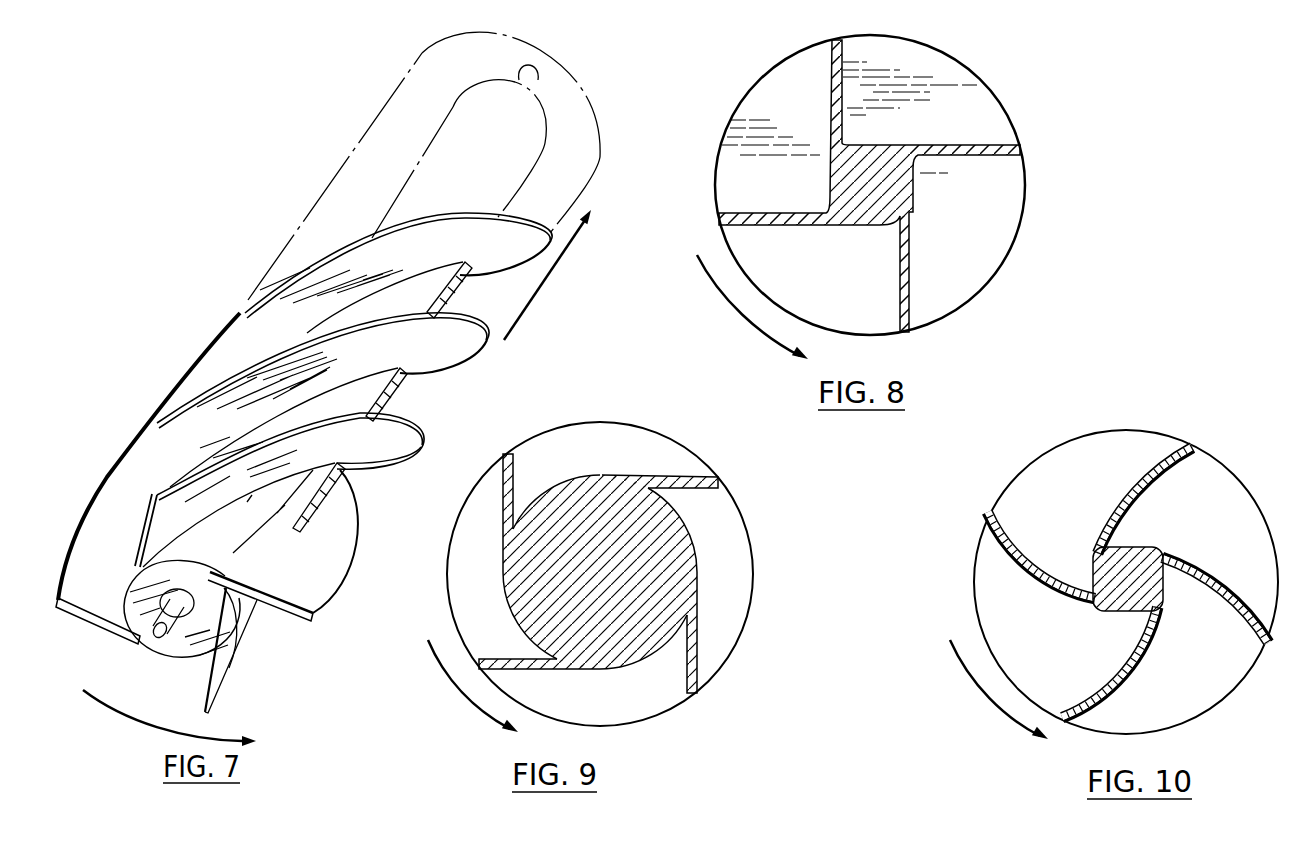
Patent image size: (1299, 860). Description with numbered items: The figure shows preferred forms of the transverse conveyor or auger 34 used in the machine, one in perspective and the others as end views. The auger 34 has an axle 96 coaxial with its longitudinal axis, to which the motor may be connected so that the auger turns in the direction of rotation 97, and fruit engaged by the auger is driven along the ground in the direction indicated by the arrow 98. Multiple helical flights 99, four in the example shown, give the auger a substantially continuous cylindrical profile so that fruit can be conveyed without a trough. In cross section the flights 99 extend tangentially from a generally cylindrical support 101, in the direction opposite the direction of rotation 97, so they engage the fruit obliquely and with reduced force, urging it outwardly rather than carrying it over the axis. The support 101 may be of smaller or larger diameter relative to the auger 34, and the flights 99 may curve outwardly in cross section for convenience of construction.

In FIG. 7, the auger 34 is at (222, 313).
In FIG. 8, the auger 34 is at (1006, 98).
In FIG. 7, the axle 96 is at (155, 632).
In FIG. 7, the direction of rotation 97 is at (212, 741).
In FIG. 8, the direction of rotation 97 is at (752, 336).
In FIG. 9, the direction of rotation 97 is at (478, 708).
In FIG. 10, the direction of rotation 97 is at (992, 711).
In FIG. 7, the direction of fruit conveyance 98 is at (533, 308).
In FIG. 7, the helical flights 99 is at (213, 488).
In FIG. 8, the helical flights 99 is at (757, 115).
In FIG. 9, the helical flights 99 is at (672, 460).
In FIG. 10, the helical flights 99 is at (1035, 487).
In FIG. 7, the cylindrical support 101 is at (372, 390).
In FIG. 8, the cylindrical support 101 is at (853, 182).
In FIG. 9, the cylindrical support 101 is at (597, 510).
In FIG. 10, the cylindrical support 101 is at (1147, 588).